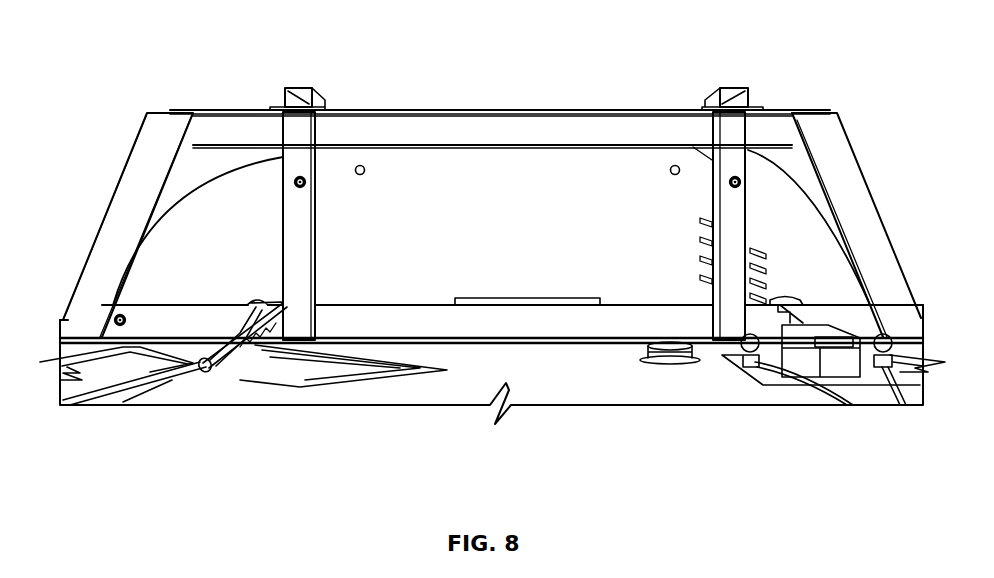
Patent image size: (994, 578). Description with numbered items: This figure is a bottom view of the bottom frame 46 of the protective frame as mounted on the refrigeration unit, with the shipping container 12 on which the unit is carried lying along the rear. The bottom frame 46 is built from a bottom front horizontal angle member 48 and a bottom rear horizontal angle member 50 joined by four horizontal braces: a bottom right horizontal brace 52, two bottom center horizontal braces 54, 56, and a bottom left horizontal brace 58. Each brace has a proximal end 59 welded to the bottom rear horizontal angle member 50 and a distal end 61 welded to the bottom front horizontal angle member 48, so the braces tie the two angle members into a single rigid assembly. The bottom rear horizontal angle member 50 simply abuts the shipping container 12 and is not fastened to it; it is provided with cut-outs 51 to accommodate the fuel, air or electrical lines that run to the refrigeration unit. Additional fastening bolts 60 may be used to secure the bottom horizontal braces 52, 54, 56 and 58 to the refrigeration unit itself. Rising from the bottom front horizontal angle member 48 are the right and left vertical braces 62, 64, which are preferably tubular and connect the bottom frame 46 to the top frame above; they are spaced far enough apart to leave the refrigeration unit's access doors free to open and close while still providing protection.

The shipping container 12 is at (778, 398).
The bottom frame 46 is at (565, 95).
The bottom front horizontal angle member 48 is at (230, 128).
The bottom rear horizontal angle member 50 is at (495, 327).
The cut-outs 51 is at (790, 318).
The bottom right horizontal brace 52 is at (124, 192).
The bottom center horizontal brace 54 is at (302, 143).
The bottom center horizontal brace 56 is at (740, 133).
The bottom left horizontal brace 58 is at (862, 220).
The proximal end 59 is at (65, 320).
The fastening bolts 60 is at (305, 182).
The distal end 61 is at (147, 118).
The right vertical brace 62 is at (295, 88).
The left vertical brace 64 is at (733, 90).